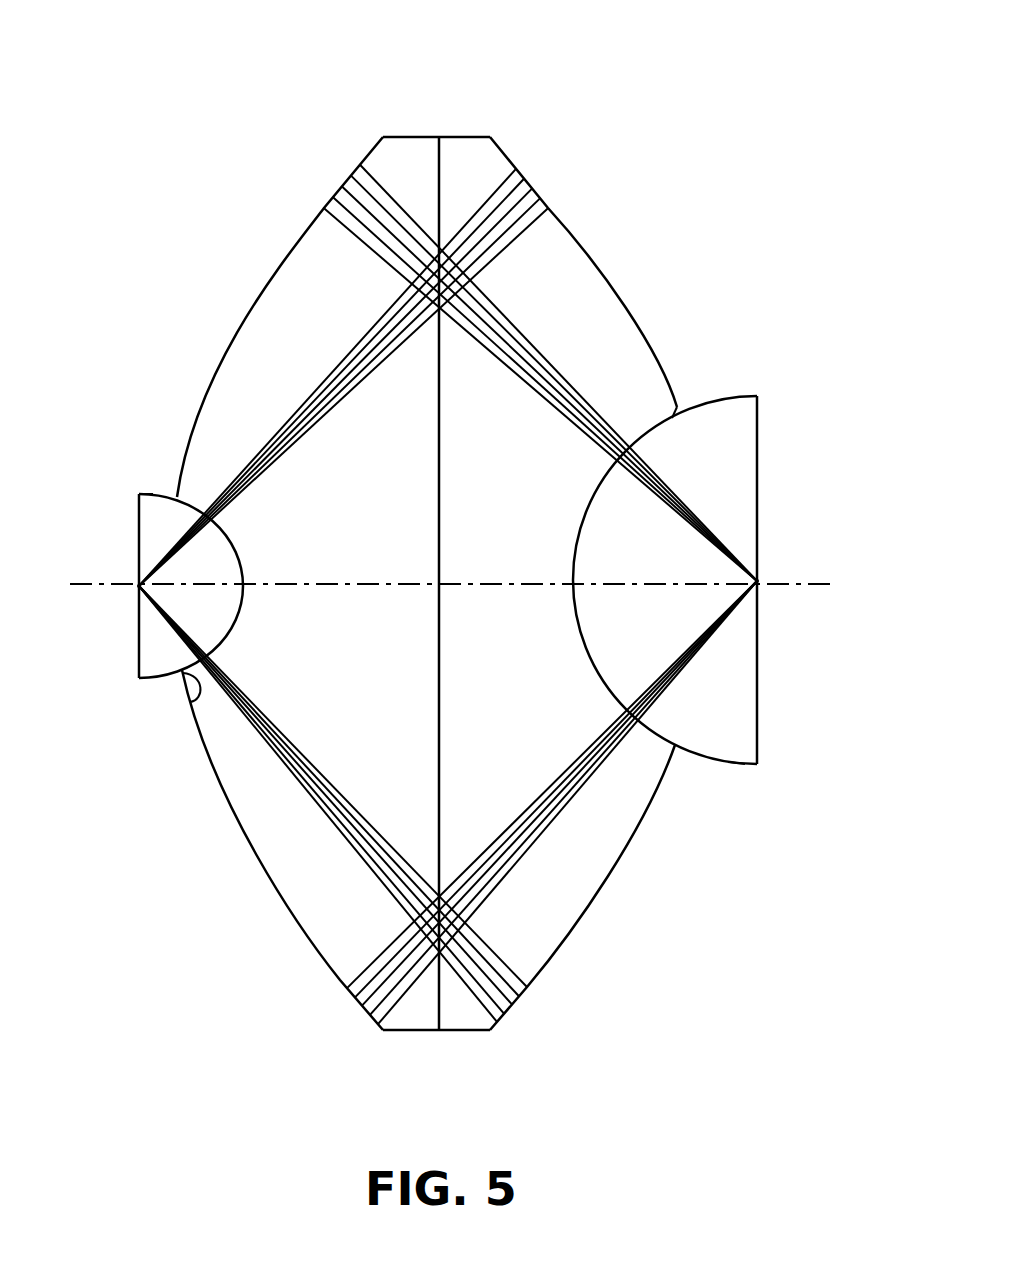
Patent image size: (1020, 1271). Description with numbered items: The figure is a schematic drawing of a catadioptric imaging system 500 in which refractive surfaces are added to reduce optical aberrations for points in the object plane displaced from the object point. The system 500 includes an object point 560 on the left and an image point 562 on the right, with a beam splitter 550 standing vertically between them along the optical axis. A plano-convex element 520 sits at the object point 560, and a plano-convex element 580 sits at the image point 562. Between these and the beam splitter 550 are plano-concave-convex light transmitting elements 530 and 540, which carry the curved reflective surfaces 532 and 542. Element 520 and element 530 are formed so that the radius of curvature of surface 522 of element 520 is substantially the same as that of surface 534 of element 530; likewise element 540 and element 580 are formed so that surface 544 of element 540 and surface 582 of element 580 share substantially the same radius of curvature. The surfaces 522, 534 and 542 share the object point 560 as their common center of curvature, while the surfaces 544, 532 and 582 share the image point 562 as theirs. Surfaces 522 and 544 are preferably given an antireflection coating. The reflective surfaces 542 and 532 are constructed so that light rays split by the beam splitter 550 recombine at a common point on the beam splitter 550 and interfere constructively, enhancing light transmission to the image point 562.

The catadioptric imaging system 500 is at (568, 90).
The plano-convex element 520 is at (157, 648).
The surface of element 520 522 is at (153, 495).
The plano-concave-convex light transmitting element 530 is at (272, 863).
The curved reflective surface 532 is at (237, 333).
The surface of element 530 534 is at (187, 708).
The plano-concave-convex light transmitting element 540 is at (612, 847).
The curved reflective surface 542 is at (563, 247).
The surface of element 540 544 is at (677, 407).
The beam splitter 550 is at (441, 668).
The object point 560 is at (139, 587).
The image point 562 is at (758, 580).
The plano-convex element 580 is at (742, 657).
The surface of element 580 582 is at (728, 762).